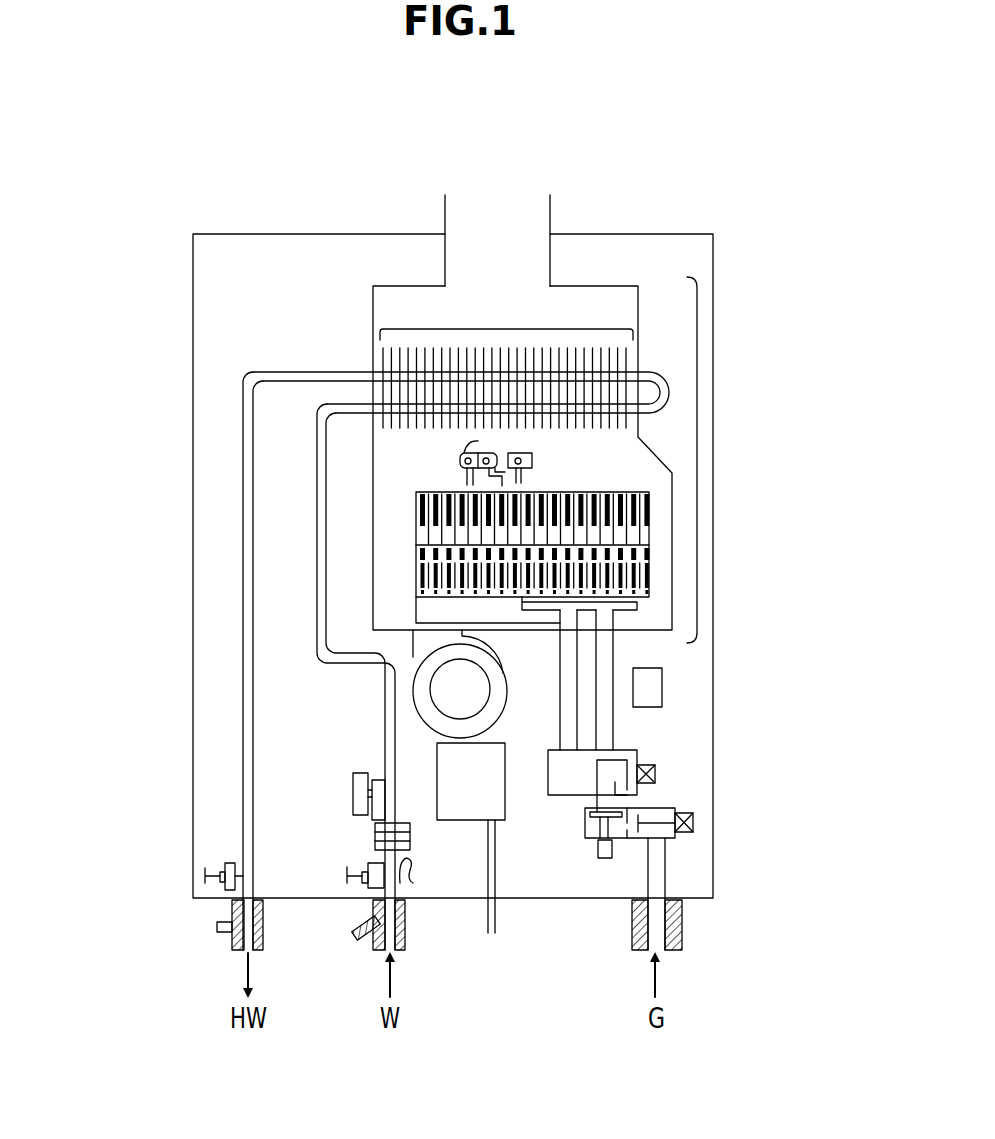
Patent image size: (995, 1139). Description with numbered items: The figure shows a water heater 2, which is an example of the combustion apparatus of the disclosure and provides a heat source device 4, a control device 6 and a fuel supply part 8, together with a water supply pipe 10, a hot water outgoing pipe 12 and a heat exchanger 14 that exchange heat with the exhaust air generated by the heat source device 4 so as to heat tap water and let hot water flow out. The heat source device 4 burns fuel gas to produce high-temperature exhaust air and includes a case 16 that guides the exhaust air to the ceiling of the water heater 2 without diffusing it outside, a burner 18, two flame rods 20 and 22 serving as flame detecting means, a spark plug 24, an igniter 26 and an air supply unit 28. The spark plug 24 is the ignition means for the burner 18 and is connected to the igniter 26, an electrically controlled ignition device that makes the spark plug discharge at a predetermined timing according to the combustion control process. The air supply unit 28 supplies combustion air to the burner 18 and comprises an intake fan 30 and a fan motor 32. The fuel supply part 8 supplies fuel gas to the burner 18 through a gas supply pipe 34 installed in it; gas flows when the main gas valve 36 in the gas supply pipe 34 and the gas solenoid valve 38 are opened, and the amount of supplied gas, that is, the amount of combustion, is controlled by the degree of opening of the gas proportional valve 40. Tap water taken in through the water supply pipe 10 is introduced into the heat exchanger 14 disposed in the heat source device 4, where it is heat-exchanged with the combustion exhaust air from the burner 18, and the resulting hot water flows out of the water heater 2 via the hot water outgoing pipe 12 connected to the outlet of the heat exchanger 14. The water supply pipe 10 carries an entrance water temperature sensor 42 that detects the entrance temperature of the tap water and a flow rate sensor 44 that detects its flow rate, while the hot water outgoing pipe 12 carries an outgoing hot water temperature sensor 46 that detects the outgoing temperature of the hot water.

The water heater 2 is at (193, 297).
The heat source device 4 is at (697, 350).
The control device 6 is at (462, 820).
The fuel supply part 8 is at (703, 1030).
The water supply pipe 10 is at (385, 725).
The hot water outgoing pipe 12 is at (243, 827).
The heat exchanger 14 is at (507, 327).
The case 16 is at (640, 298).
The burner 18 is at (420, 505).
The flame rod 20 is at (495, 448).
The flame rod 22 is at (470, 452).
The spark plug 24 is at (525, 477).
The igniter 26 is at (662, 690).
The air supply unit 28 is at (492, 652).
The intake fan 30 is at (495, 705).
The fan motor 32 is at (445, 700).
The gas supply pipe 34 is at (665, 877).
The main gas valve 36 is at (693, 825).
The gas solenoid valve 38 is at (655, 775).
The gas proportional valve 40 is at (592, 838).
The entrance water temperature sensor 42 is at (352, 868).
The flow rate sensor 44 is at (367, 840).
The outgoing hot water temperature sensor 46 is at (228, 890).